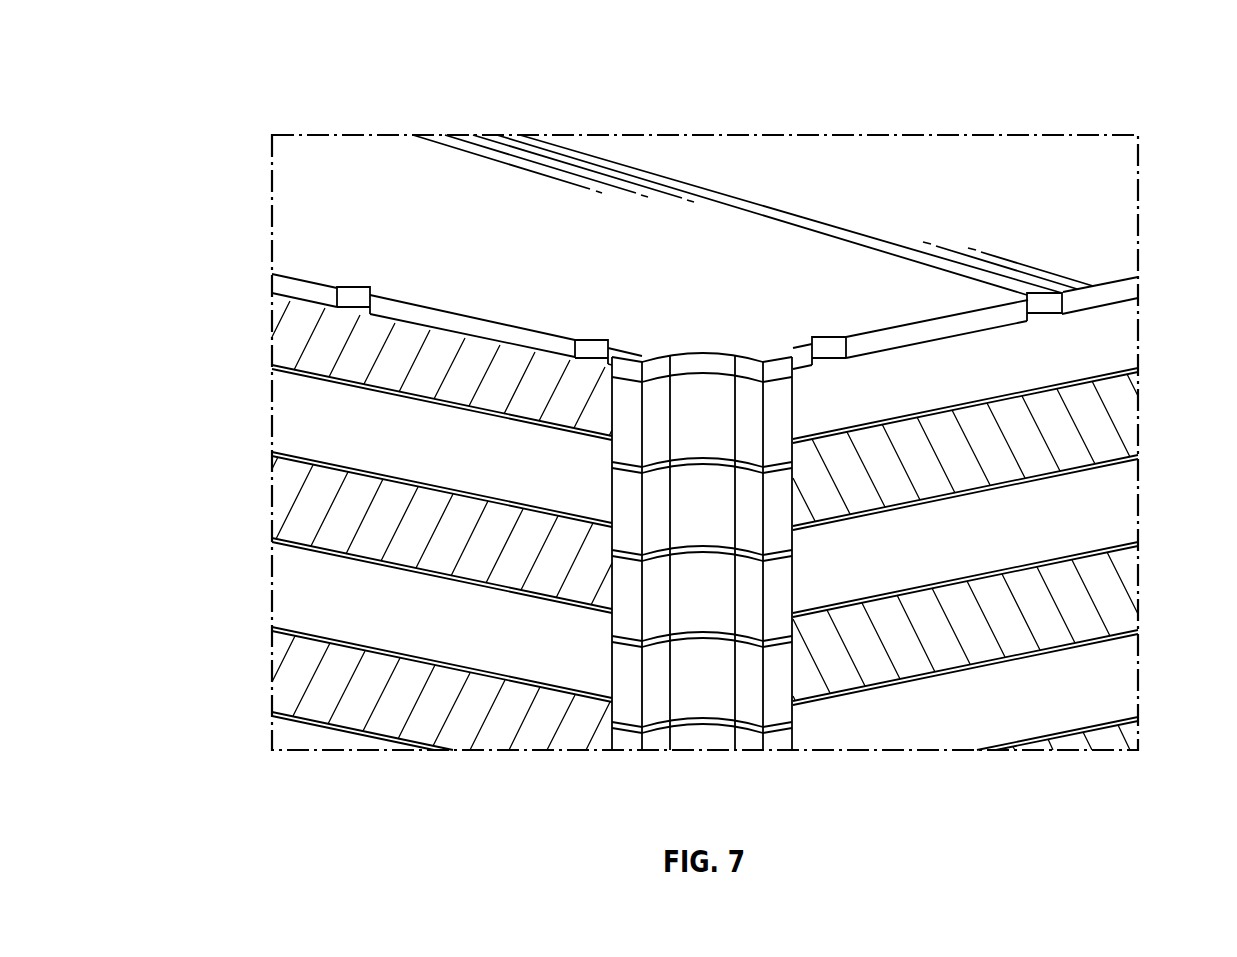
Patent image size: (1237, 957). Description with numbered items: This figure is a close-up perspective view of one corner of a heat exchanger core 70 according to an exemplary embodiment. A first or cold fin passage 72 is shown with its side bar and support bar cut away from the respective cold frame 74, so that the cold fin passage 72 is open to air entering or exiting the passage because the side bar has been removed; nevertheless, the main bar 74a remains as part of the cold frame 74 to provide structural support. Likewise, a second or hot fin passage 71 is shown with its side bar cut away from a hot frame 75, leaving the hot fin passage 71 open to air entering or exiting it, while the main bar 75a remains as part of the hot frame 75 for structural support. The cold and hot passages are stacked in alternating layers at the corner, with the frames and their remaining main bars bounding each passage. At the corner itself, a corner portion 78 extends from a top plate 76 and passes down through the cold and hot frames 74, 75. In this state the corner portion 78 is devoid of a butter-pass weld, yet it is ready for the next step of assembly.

The heat exchanger core 70 is at (1086, 80).
The hot fin passage 71 is at (1057, 437).
The cold fin passage 72 is at (283, 332).
The cold frame 74 is at (781, 390).
The main bar 74a is at (1072, 357).
The hot frame 75 is at (626, 534).
The main bar 75a is at (388, 452).
The top plate 76 is at (380, 188).
The corner portion 78 is at (720, 669).